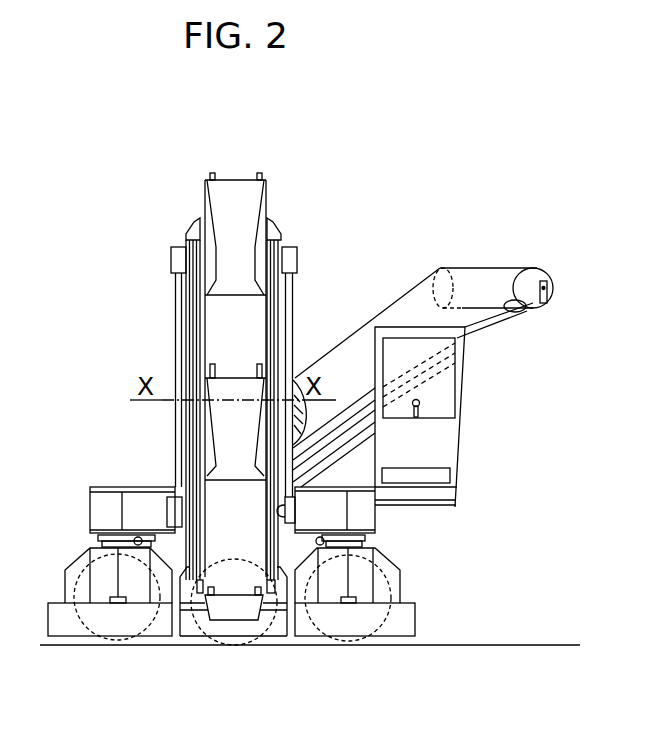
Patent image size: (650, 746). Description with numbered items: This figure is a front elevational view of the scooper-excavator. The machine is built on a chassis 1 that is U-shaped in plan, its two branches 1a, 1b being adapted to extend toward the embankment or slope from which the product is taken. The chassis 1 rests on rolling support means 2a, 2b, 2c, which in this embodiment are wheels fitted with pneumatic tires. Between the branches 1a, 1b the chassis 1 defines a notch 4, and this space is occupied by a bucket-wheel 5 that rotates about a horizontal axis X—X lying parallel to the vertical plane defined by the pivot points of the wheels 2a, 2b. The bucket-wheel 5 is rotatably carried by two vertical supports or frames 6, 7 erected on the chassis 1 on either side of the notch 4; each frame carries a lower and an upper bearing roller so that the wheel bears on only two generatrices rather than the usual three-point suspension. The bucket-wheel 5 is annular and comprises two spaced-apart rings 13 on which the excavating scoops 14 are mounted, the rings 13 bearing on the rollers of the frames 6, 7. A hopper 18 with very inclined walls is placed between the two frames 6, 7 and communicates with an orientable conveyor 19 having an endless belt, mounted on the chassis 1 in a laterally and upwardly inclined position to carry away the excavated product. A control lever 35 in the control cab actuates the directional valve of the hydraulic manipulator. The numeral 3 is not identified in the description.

The chassis 1 is at (92, 518).
The branch of the chassis 1a is at (136, 497).
The branch of the chassis 1b is at (363, 520).
The rolling support means 2a is at (117, 640).
The rolling support means 2b is at (349, 640).
The rolling support means 2c is at (236, 640).
The pivot pins 3 is at (143, 541).
The notch 4 is at (296, 503).
The bucket-wheel 5 is at (271, 203).
The vertical support or frame 6 is at (179, 307).
The vertical support or frame 7 is at (290, 318).
The ring 13 is at (201, 230).
The excavating scoop 14 is at (236, 195).
The hopper 18 is at (305, 418).
The orientable conveyor 19 is at (396, 300).
The control lever 35 is at (420, 412).